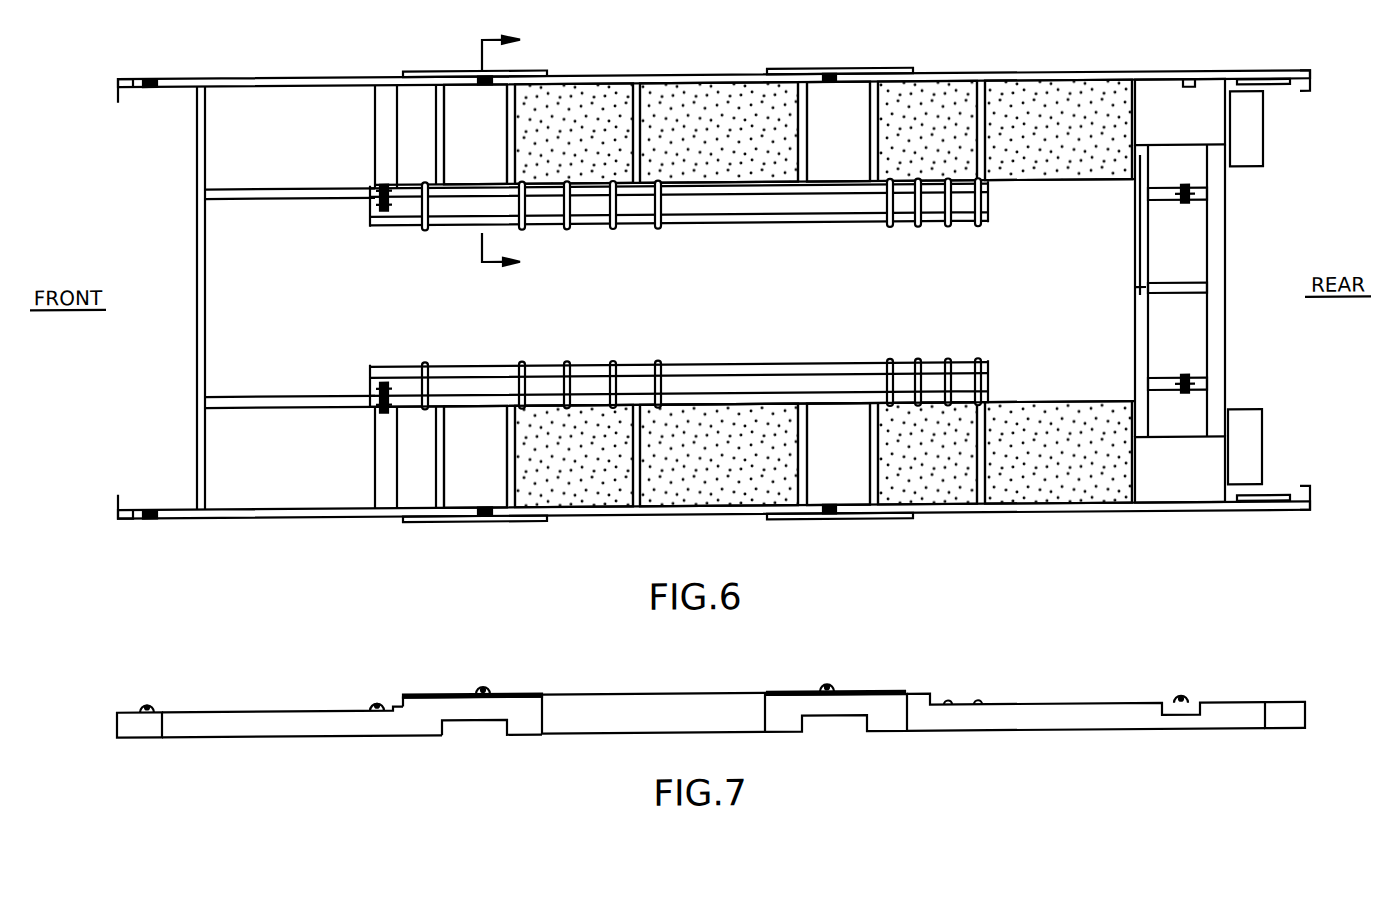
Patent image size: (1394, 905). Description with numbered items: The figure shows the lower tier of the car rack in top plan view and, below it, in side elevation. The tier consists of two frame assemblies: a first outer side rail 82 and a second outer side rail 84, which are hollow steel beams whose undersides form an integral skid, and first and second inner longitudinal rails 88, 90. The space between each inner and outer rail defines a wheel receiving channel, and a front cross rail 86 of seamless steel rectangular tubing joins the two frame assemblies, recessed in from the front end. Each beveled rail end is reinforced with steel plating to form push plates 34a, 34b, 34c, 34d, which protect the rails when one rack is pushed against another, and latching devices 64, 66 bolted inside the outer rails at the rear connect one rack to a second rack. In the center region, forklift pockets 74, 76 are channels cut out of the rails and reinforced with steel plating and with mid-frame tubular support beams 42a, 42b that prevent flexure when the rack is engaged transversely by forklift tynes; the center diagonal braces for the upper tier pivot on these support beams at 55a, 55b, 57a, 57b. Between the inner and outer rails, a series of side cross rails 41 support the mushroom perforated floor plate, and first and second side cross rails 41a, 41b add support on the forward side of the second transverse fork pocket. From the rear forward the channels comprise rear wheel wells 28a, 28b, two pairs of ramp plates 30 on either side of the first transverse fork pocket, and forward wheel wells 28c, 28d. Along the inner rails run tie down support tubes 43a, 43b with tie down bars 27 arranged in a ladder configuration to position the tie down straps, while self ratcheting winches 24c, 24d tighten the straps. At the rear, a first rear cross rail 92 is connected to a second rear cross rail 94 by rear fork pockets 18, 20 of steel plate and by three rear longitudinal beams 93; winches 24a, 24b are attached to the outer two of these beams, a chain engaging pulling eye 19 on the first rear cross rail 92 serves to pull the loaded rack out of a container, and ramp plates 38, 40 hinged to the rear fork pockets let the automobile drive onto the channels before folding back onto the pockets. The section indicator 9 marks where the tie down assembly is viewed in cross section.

In FIG. 6, the rear fork pocket 18 is at (1164, 483).
In FIG. 6, the chain engaging pulling eye 19 is at (1138, 292).
In FIG. 6, the rear fork pocket 20 is at (1166, 129).
In FIG. 6, the winch 24a is at (1190, 195).
In FIG. 6, the winch 24b is at (1190, 391).
In FIG. 6, the self ratcheting winch means 24c is at (378, 390).
In FIG. 6, the self ratcheting winch means 24d is at (380, 200).
In FIG. 6, the tie down bar 27 is at (662, 388).
In FIG. 6, the rear wheel well 28a is at (1048, 156).
In FIG. 6, the rear wheel well 28b is at (1040, 471).
In FIG. 6, the forward wheel well 28c is at (545, 471).
In FIG. 6, the forward wheel well 28d is at (560, 156).
In FIG. 6, the ramp plate 30 is at (709, 150).
In FIG. 6, the push plate 34a is at (1310, 85).
In FIG. 6, the push plate 34b is at (1310, 515).
In FIG. 7, the push plate 34b is at (1305, 711).
In FIG. 6, the push plate 34c is at (120, 514).
In FIG. 7, the push plate 34c is at (117, 728).
In FIG. 6, the push plate 34d is at (124, 76).
In FIG. 6, the ramp plate 38 is at (1255, 425).
In FIG. 6, the ramp plate 40 is at (1263, 150).
In FIG. 6, the side cross rail 41 is at (437, 139).
In FIG. 6, the first side cross rail 41a is at (375, 149).
In FIG. 6, the second side cross rail 41b is at (375, 458).
In FIG. 6, the mid-frame tubular support beam 42a is at (705, 521).
In FIG. 7, the mid-frame tubular support beam 42a is at (710, 694).
In FIG. 6, the mid-frame tubular support beam 42b is at (747, 226).
In FIG. 6, the tie down support tube 43a is at (821, 366).
In FIG. 6, the tie down support tube 43b is at (848, 226).
In FIG. 6, the pivot connection for center brace 55a is at (483, 522).
In FIG. 7, the pivot connection for center brace 55a is at (494, 692).
In FIG. 6, the pivot connection for center brace 55b is at (481, 72).
In FIG. 6, the pivot connection for center brace 57a is at (842, 522).
In FIG. 7, the pivot connection for center brace 57a is at (838, 691).
In FIG. 6, the pivot connection for center brace 57b is at (832, 72).
In FIG. 6, the latching device 64 is at (1263, 500).
In FIG. 6, the latching device 66 is at (1265, 90).
In FIG. 6, the forklift pocket 74 is at (462, 153).
In FIG. 7, the forklift pocket 74 is at (478, 737).
In FIG. 6, the forklift pocket 76 is at (824, 150).
In FIG. 7, the forklift pocket 76 is at (835, 735).
In FIG. 6, the first outer side rail 82 is at (1052, 76).
In FIG. 7, the first outer side rail 82 is at (311, 737).
In FIG. 6, the second outer side rail 84 is at (276, 77).
In FIG. 7, the second outer side rail 84 is at (1086, 735).
In FIG. 6, the front cross rail 86 is at (197, 272).
In FIG. 6, the inner longitudinal rail 88 is at (287, 394).
In FIG. 6, the inner longitudinal rail 90 is at (313, 200).
In FIG. 6, the first rear cross rail 92 is at (1135, 348).
In FIG. 6, the rear longitudinal beam 93 is at (1176, 205).
In FIG. 6, the second rear cross rail 94 is at (1225, 326).
In FIG. 6, the section line 9 is at (514, 151).